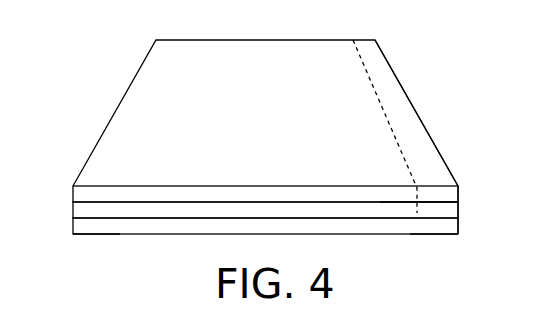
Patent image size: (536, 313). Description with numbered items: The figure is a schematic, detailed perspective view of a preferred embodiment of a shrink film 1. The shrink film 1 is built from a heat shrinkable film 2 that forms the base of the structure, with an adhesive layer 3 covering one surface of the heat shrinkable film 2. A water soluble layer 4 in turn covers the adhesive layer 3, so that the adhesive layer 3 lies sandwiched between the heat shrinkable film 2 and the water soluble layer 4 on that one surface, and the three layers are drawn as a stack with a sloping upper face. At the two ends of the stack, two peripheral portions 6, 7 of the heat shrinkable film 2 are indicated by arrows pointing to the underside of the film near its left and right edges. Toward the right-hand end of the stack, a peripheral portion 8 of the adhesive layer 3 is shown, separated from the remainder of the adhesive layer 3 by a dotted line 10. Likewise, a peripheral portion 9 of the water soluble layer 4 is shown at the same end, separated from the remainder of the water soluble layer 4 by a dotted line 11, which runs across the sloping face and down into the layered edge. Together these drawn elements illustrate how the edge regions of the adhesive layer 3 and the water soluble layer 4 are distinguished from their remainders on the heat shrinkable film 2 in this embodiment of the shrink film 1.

The shrink film 1 is at (97, 58).
The heat shrinkable film 2 is at (78, 226).
The adhesive layer 3 is at (80, 211).
The water soluble layer 4 is at (80, 195).
The peripheral portion 6 is at (438, 248).
The peripheral portion 7 is at (82, 248).
The peripheral portion of the adhesive layer 8 is at (450, 208).
The peripheral portion of the water soluble layer 9 is at (408, 117).
The dotted line 10 is at (409, 207).
The dotted line 11 is at (406, 193).